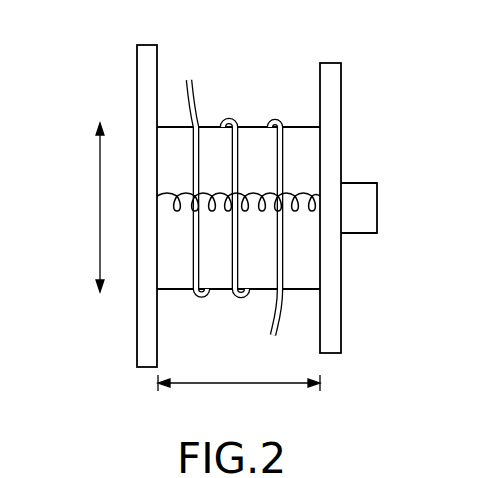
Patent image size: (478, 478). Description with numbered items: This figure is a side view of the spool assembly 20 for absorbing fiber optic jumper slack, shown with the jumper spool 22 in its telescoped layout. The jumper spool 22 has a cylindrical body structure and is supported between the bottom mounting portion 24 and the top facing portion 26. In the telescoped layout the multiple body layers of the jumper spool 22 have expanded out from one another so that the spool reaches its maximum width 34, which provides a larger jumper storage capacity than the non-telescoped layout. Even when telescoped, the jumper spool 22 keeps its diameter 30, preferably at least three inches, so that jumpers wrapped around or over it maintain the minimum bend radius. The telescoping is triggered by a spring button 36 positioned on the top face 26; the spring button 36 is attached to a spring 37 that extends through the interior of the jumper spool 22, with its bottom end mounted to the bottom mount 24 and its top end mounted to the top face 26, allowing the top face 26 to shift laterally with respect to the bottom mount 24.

The spool assembly 20 is at (366, 97).
The jumper spool 22 is at (246, 124).
The bottom mounting portion 24 is at (137, 60).
The top facing portion 26 is at (332, 63).
The diameter 30 is at (100, 204).
The width 34 is at (237, 383).
The spring button 36 is at (362, 208).
The spring 37 is at (305, 197).